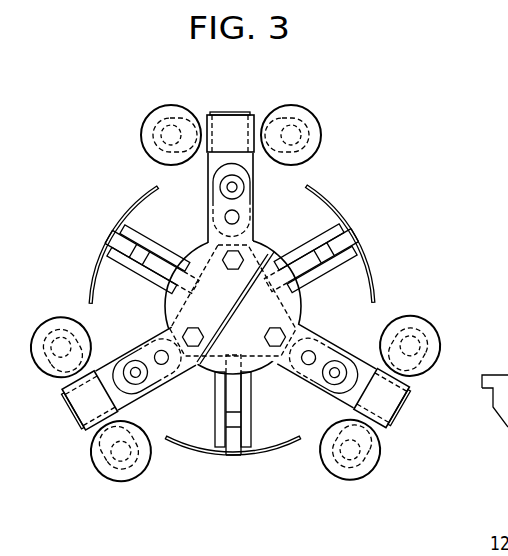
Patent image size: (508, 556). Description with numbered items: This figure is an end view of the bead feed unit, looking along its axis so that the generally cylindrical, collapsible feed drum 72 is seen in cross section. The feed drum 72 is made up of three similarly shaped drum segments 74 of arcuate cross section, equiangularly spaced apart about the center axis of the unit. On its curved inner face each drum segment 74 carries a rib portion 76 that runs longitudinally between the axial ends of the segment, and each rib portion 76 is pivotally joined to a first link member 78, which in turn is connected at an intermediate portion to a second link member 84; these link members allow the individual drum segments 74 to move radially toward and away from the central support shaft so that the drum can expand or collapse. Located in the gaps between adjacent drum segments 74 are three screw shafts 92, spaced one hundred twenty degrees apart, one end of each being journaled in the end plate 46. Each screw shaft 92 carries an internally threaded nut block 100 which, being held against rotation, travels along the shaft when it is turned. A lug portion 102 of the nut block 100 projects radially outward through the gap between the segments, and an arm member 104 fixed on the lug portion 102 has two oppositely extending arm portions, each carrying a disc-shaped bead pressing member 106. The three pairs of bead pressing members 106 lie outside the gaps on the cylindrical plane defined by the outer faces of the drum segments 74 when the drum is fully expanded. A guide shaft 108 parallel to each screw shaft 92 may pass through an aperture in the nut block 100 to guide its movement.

The end plate 46 is at (273, 252).
The feed drum 72 is at (343, 190).
The drum segment 74 is at (232, 460).
The rib portion 76 is at (252, 448).
The first link member 78 is at (244, 411).
The second link member 84 is at (216, 430).
The screw shaft 92 is at (213, 201).
The nut block 100 is at (208, 168).
The lug portion 102 is at (238, 112).
The arm member 104 is at (207, 113).
The bead pressing member 106 is at (147, 116).
The guide shaft 108 is at (240, 216).